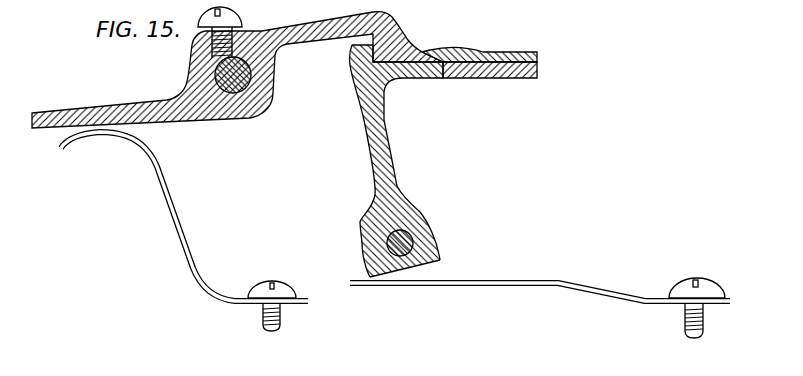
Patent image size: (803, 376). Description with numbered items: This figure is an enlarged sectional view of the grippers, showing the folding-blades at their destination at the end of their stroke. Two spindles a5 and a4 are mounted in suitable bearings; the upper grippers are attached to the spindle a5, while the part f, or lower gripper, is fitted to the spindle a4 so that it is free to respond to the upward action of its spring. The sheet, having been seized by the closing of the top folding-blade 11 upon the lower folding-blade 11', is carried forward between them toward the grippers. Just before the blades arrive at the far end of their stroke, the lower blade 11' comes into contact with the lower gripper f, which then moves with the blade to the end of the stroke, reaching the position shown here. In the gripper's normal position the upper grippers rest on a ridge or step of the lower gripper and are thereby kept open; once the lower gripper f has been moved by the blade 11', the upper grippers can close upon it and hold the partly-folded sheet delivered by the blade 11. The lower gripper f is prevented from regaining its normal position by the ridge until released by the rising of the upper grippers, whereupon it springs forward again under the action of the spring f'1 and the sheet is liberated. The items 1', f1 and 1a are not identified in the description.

The bracket arm 1' is at (237, 70).
The spindle a5 is at (214, 73).
The top folding-blade 11 is at (493, 41).
The lower folding-blade 11' is at (500, 84).
The lower gripper f is at (393, 161).
The foot of bracket f1 is at (420, 268).
The spindle a4 is at (386, 244).
The spring f'1 is at (540, 299).
The spring strip 1a is at (173, 235).